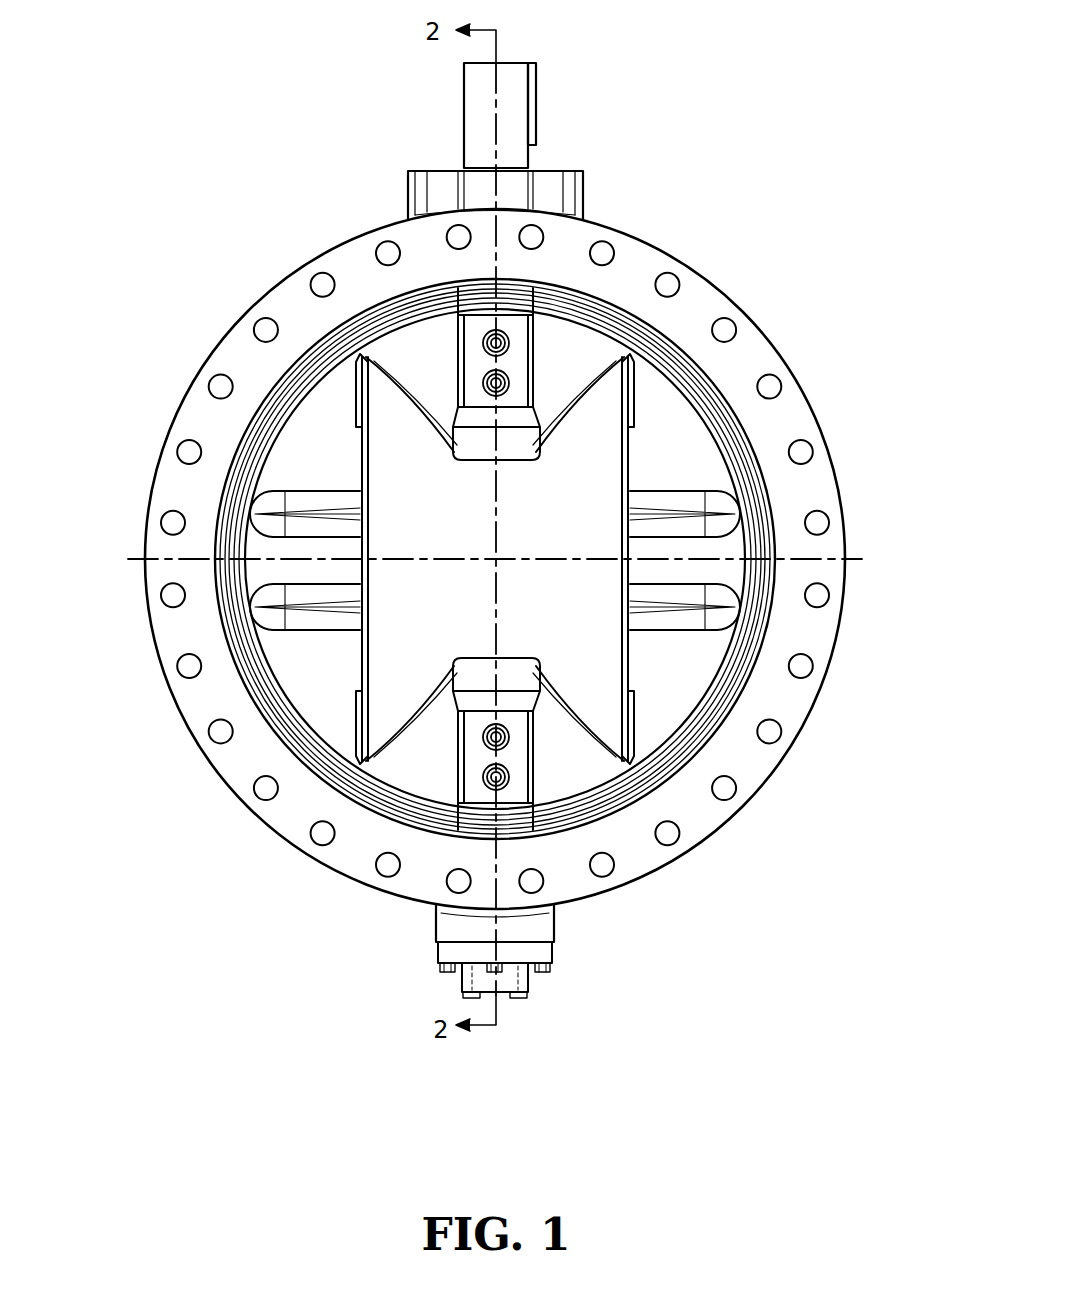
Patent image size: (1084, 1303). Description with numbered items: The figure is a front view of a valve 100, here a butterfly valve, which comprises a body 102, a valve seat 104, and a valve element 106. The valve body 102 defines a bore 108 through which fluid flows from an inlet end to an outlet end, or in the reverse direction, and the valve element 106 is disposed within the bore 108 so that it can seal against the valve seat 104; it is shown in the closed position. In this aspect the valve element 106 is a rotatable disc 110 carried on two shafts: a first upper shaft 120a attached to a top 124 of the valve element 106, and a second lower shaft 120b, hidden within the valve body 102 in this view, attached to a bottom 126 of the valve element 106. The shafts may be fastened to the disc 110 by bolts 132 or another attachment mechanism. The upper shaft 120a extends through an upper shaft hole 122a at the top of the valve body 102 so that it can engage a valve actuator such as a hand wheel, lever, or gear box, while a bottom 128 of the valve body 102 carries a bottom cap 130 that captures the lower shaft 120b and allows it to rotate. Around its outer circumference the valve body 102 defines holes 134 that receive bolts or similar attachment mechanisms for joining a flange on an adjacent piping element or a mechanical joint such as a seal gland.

The valve 100 is at (779, 241).
The body 102 is at (807, 421).
The valve seat 104 is at (745, 670).
The valve element 106 is at (325, 433).
The bore 108 is at (293, 674).
The rotatable disc 110 is at (297, 448).
The first upper shaft 120a is at (518, 93).
The second lower shaft 120b is at (527, 830).
The upper shaft hole 122a is at (533, 168).
The top of the valve element 124 is at (545, 335).
The bottom of the valve element 126 is at (557, 775).
The bottom of the valve body 128 is at (513, 897).
The bottom cap 130 is at (530, 983).
The fasteners 132 is at (490, 343).
The holes 134 is at (725, 328).